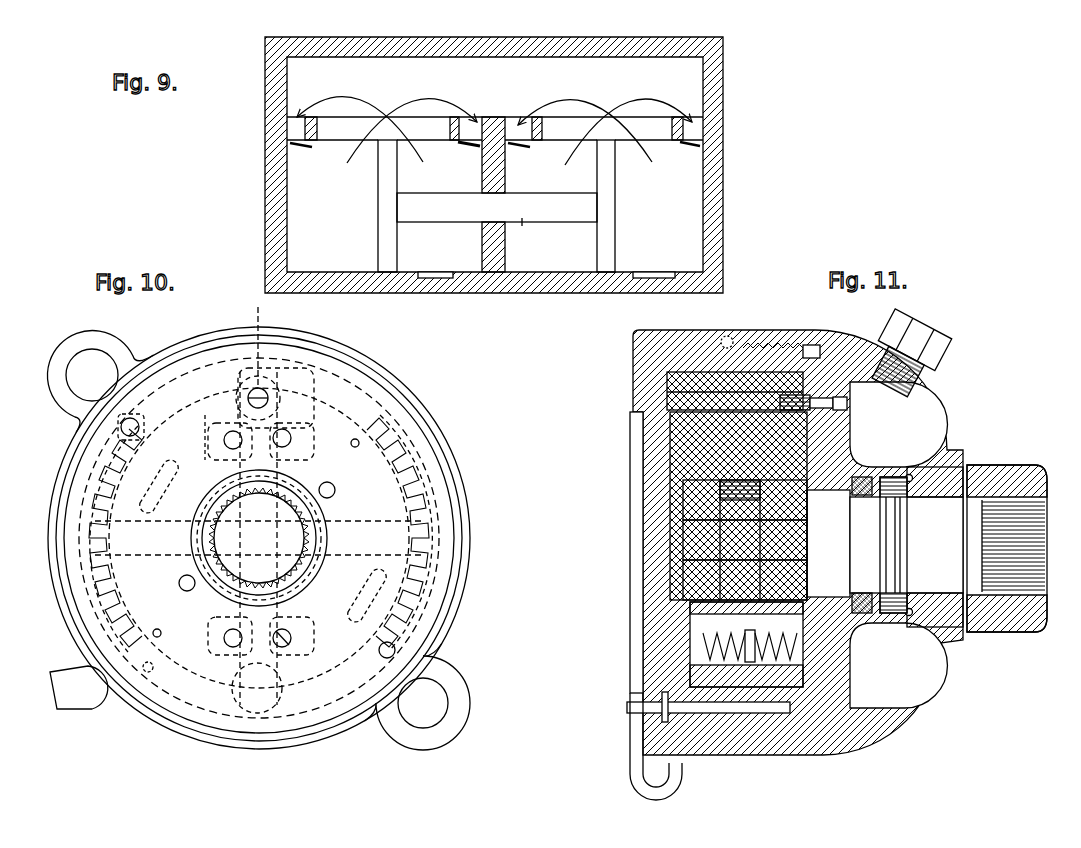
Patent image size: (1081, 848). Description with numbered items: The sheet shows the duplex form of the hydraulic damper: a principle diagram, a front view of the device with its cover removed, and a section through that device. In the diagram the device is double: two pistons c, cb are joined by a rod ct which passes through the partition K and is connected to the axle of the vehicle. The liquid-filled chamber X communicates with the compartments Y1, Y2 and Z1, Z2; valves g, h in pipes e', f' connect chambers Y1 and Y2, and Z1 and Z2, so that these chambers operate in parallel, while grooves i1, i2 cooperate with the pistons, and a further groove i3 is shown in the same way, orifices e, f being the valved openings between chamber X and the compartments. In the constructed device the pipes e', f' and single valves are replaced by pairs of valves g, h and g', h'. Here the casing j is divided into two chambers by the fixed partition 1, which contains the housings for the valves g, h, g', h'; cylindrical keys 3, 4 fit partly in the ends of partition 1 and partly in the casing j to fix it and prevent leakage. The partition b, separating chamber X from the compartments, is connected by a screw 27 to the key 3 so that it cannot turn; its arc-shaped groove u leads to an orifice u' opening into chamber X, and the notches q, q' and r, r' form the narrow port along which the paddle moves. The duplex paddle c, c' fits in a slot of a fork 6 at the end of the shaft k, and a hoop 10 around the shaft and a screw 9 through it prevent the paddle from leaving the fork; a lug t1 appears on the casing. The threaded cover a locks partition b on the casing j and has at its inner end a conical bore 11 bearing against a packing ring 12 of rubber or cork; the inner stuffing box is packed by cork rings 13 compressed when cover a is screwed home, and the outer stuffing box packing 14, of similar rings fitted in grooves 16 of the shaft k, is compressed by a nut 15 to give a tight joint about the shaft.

In FIG. 9, the partition K is at (508, 254).
In FIG. 9, the chamber X is at (495, 96).
In FIG. 11, the chamber X is at (899, 424).
In FIG. 9, the chamber Y1 is at (332, 182).
In FIG. 10, the chamber Y1 is at (344, 464).
In FIG. 9, the chamber Y2 is at (551, 196).
In FIG. 10, the chamber Y2 is at (168, 496).
In FIG. 9, the chamber Z1 is at (439, 196).
In FIG. 10, the chamber Z1 is at (325, 634).
In FIG. 9, the chamber Z2 is at (659, 178).
In FIG. 10, the chamber Z2 is at (162, 602).
In FIG. 9, the piston c is at (387, 206).
In FIG. 10, the piston c is at (361, 510).
In FIG. 11, the piston c is at (653, 541).
In FIG. 9, the rod ct is at (497, 222).
In FIG. 9, the piston cb is at (607, 227).
In FIG. 9, the groove i1 is at (421, 273).
In FIG. 9, the groove i2 is at (650, 273).
In FIG. 10, the groove i2 is at (143, 512).
In FIG. 10, the port i3 is at (374, 592).
In FIG. 10, the valve g is at (314, 441).
In FIG. 9, the valve g' is at (416, 158).
In FIG. 10, the valve g' is at (216, 441).
In FIG. 9, the valve h is at (469, 159).
In FIG. 10, the valve h is at (296, 644).
In FIG. 11, the valve h is at (858, 649).
In FIG. 9, the valve h' is at (688, 158).
In FIG. 10, the valve h' is at (216, 644).
In FIG. 10, the casing j is at (387, 378).
In FIG. 11, the casing j is at (650, 367).
In FIG. 10, the notches q is at (410, 528).
In FIG. 10, the gear segment q' is at (84, 539).
In FIG. 10, the orifice e is at (303, 462).
In FIG. 10, the pipe e' is at (205, 463).
In FIG. 10, the notches r is at (380, 478).
In FIG. 10, the rack r' is at (132, 598).
In FIG. 10, the piston c' is at (145, 572).
In FIG. 10, the groove u is at (449, 607).
In FIG. 10, the orifice u' is at (52, 584).
In FIG. 10, the partition b is at (257, 539).
In FIG. 11, the partition b is at (840, 434).
In FIG. 10, the orifice f is at (299, 616).
In FIG. 11, the orifice f is at (833, 533).
In FIG. 10, the pipe f' is at (209, 617).
In FIG. 10, the shaft k is at (258, 560).
In FIG. 11, the shaft k is at (828, 543).
In FIG. 10, the lug t1 is at (79, 687).
In FIG. 11, the lug t1 is at (683, 780).
In FIG. 11, the cover a is at (927, 407).
In FIG. 10, the fixed partition 1 is at (205, 415).
In FIG. 11, the fixed partition 1 is at (707, 448).
In FIG. 10, the cylindrical key 3 is at (242, 372).
In FIG. 11, the cylindrical key 3 is at (678, 394).
In FIG. 10, the cylindrical key 4 is at (257, 688).
In FIG. 11, the fork 6 is at (683, 573).
In FIG. 11, the screw 9 is at (670, 510).
In FIG. 11, the hoop 10 is at (687, 598).
In FIG. 10, the conical bore 11 is at (352, 757).
In FIG. 11, the conical bore 11 is at (738, 338).
In FIG. 11, the packing ring 12 is at (721, 337).
In FIG. 11, the rings 13 is at (862, 477).
In FIG. 11, the packing 14 is at (881, 497).
In FIG. 11, the nut 15 is at (931, 497).
In FIG. 10, the grooves 16 is at (162, 634).
In FIG. 11, the grooves 16 is at (887, 551).
In FIG. 10, the screw 27 is at (267, 406).
In FIG. 11, the screw 27 is at (847, 404).